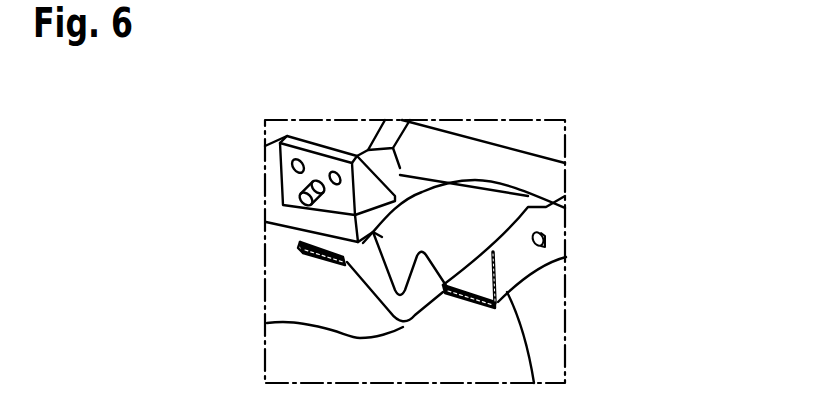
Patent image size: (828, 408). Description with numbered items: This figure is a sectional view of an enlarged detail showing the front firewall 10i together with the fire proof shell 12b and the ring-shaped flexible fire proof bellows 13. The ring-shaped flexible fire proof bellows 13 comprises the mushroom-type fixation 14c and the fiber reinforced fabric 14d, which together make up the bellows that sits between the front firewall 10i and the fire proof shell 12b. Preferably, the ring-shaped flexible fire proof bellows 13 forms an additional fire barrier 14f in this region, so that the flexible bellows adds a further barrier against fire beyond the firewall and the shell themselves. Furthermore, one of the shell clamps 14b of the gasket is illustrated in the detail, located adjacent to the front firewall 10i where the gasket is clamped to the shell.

The front firewall 10i is at (349, 142).
The shell clamp 14b is at (397, 172).
The fiber reinforced fabric 14d is at (452, 226).
The mushroom-type fixation 14c is at (552, 249).
The additional fire barrier 14f is at (267, 323).
The fire proof shell 12b is at (312, 290).
The ring-shaped flexible fire proof bellows 13 is at (550, 311).